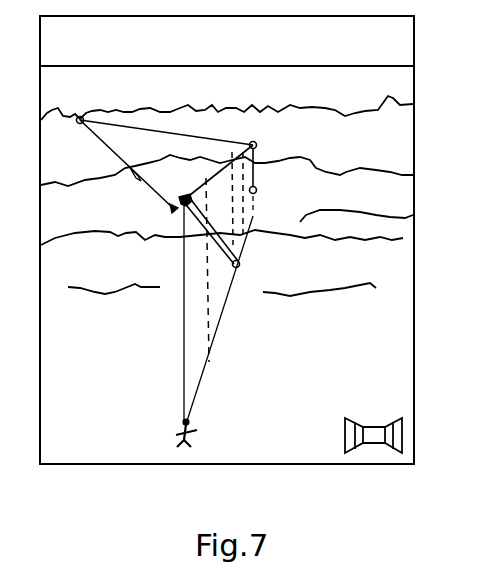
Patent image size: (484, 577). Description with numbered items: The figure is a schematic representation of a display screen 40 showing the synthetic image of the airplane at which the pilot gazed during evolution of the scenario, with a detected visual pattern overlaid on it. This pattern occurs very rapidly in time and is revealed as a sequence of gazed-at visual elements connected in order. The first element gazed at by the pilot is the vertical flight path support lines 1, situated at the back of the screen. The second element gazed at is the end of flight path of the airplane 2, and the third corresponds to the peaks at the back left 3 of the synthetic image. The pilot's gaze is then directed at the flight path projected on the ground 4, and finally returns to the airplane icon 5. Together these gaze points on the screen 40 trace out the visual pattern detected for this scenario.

The vertical flight path support lines 1 is at (262, 174).
The end of flight path of the airplane 2 is at (262, 145).
The peaks at the back left 3 is at (75, 133).
The flight path projected on the ground 4 is at (247, 265).
The airplane icon 5 is at (184, 189).
The display screen 40 is at (88, 465).